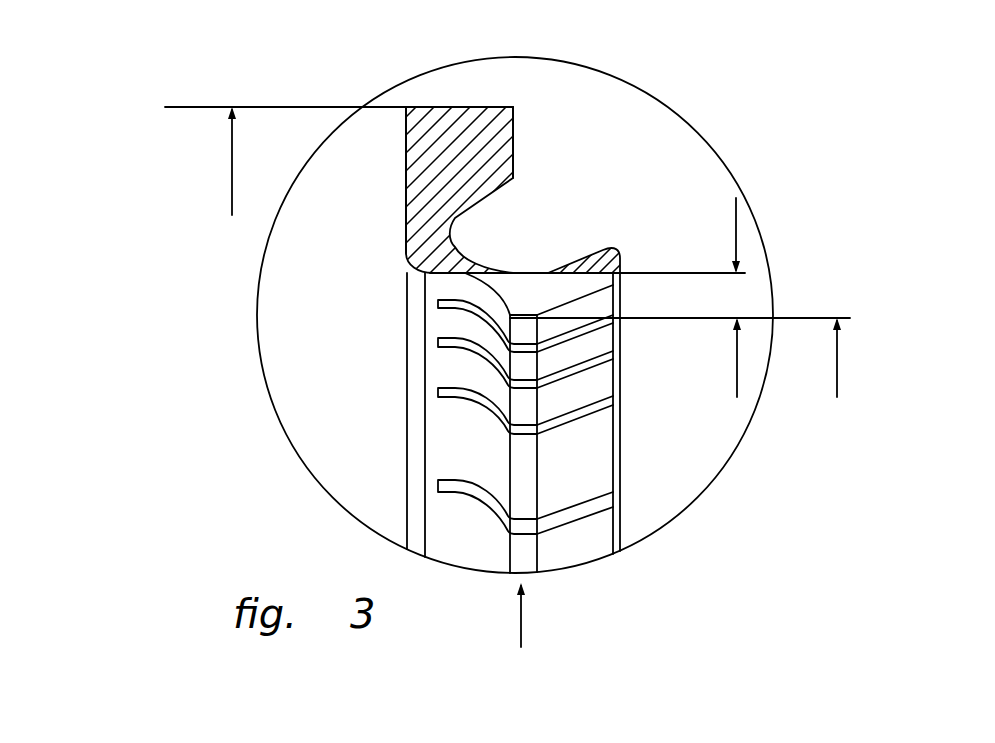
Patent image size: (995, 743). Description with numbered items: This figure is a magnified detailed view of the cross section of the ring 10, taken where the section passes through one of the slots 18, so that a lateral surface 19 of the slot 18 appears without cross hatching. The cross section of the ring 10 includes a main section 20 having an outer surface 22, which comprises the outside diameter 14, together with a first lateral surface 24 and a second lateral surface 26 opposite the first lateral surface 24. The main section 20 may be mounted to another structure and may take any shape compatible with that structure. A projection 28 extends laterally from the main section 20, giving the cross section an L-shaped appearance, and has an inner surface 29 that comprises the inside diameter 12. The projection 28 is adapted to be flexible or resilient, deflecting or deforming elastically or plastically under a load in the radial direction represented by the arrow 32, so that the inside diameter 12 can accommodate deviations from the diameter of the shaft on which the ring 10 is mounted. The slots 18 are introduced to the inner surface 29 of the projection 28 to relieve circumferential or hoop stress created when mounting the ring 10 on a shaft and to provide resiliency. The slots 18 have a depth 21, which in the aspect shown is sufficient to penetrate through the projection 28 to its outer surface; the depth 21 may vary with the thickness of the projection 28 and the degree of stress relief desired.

The ring 10 is at (552, 102).
The inside diameter 12 is at (835, 366).
The outside diameter 14 is at (231, 163).
The indentation 18 is at (462, 313).
The lateral surface 19 is at (530, 298).
The main section 20 is at (435, 135).
The depth 21 is at (737, 225).
The outer surface 22 is at (477, 107).
The first lateral surface 24 is at (407, 173).
The second lateral surface 26 is at (515, 142).
The projection 28 is at (605, 248).
The inner surface 29 is at (458, 435).
The arrow 32 is at (522, 622).